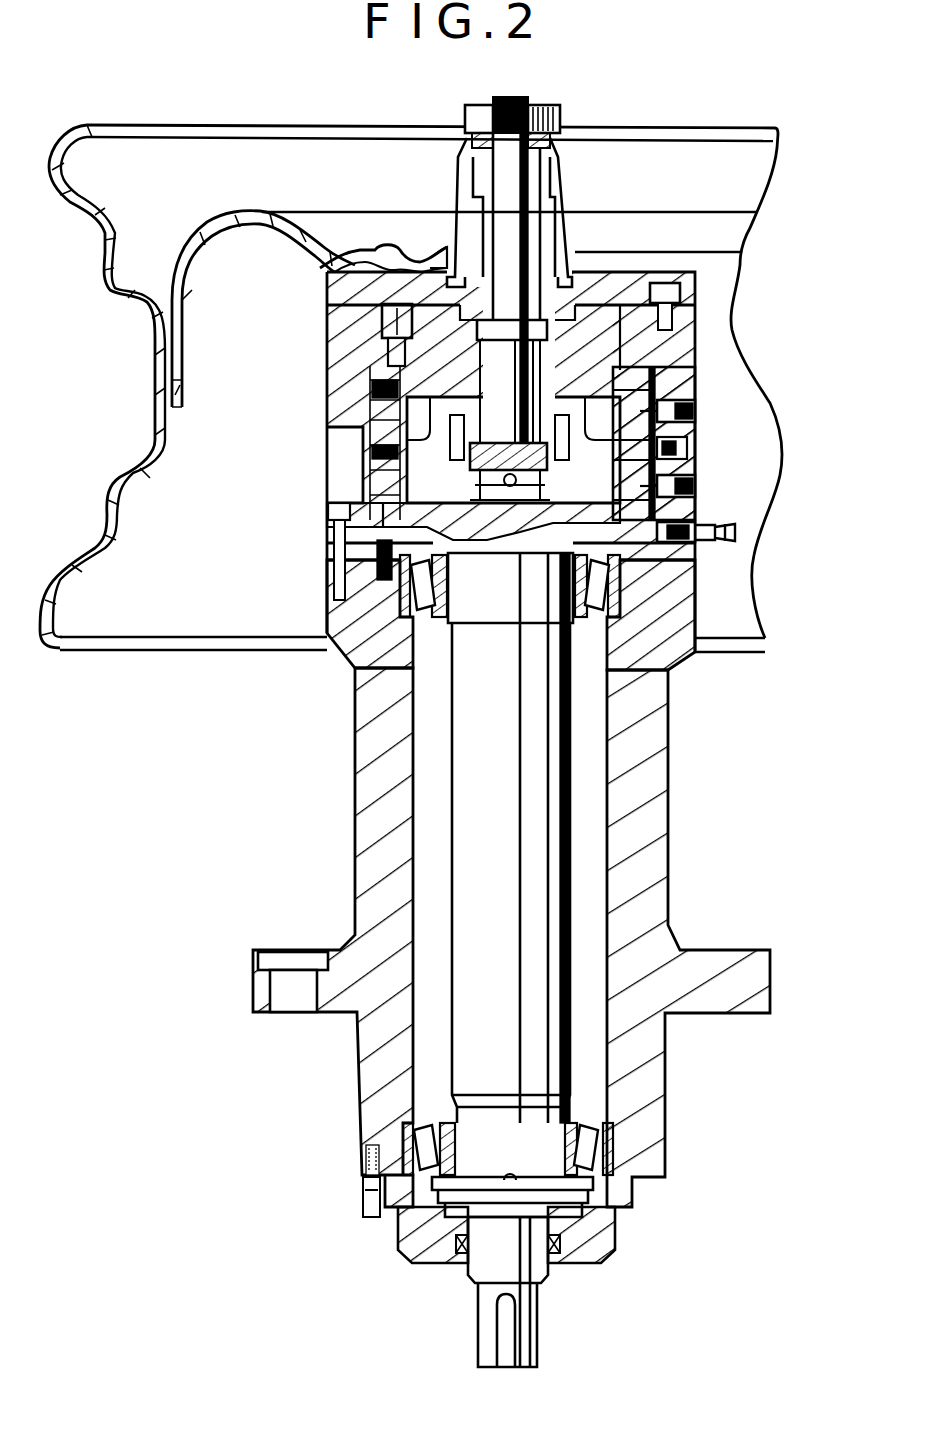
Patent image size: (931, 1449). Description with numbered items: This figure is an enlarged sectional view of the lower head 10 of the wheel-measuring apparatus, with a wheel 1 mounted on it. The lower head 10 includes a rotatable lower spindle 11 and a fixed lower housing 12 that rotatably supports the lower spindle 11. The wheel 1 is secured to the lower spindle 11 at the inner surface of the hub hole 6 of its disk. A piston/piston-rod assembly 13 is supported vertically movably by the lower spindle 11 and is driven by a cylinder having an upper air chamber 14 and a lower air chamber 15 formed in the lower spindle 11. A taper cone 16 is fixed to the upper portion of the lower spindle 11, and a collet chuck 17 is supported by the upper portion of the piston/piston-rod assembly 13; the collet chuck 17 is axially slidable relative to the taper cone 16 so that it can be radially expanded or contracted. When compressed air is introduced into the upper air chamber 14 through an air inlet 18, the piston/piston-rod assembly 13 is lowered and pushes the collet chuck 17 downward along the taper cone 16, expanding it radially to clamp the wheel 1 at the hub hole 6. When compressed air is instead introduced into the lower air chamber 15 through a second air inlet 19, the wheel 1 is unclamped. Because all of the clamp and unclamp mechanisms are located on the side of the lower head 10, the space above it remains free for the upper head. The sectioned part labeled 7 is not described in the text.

The wheel 1 is at (255, 220).
The hub hole 6 is at (467, 258).
The bolt 7 is at (383, 262).
The lower head 10 is at (684, 697).
The lower spindle 11 is at (697, 337).
The lower housing 12 is at (650, 808).
The piston/piston-rod assembly 13 is at (740, 252).
The upper air chamber 14 is at (697, 447).
The lower air chamber 15 is at (697, 460).
The taper cone 16 is at (548, 247).
The collet chuck 17 is at (552, 228).
The air inlet 18 is at (692, 412).
The air inlet 19 is at (693, 487).